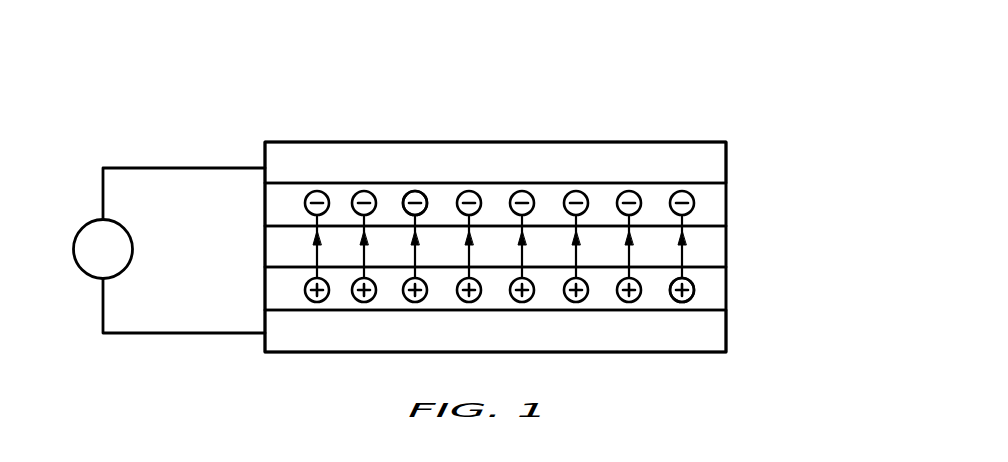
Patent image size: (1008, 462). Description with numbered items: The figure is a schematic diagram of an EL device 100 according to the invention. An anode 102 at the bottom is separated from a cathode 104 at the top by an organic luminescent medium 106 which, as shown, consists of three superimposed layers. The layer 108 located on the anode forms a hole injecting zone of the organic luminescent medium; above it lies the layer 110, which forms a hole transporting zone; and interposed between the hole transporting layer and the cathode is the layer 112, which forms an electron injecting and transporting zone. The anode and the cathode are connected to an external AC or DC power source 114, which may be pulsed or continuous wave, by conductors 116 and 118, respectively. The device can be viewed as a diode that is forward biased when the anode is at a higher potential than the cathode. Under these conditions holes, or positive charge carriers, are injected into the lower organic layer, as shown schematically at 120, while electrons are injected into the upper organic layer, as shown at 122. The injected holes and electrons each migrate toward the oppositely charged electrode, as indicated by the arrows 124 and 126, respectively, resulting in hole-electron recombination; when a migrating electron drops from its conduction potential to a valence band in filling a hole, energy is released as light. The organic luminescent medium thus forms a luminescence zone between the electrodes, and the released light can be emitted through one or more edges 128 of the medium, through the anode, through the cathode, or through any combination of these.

The EL device 100 is at (780, 107).
The anode 102 is at (726, 330).
The cathode 104 is at (726, 163).
The organic luminescent medium 106 is at (733, 178).
The hole injecting layer 108 is at (265, 296).
The hole transporting layer 110 is at (265, 250).
The electron injecting and transporting layer 112 is at (265, 200).
The power source 114 is at (90, 223).
The conductor 116 is at (184, 329).
The conductor 118 is at (167, 168).
The hole injection 120 is at (586, 298).
The electron injection 122 is at (481, 203).
The arrows 124 is at (497, 232).
The arrows 126 is at (420, 216).
The edges 128 is at (706, 294).